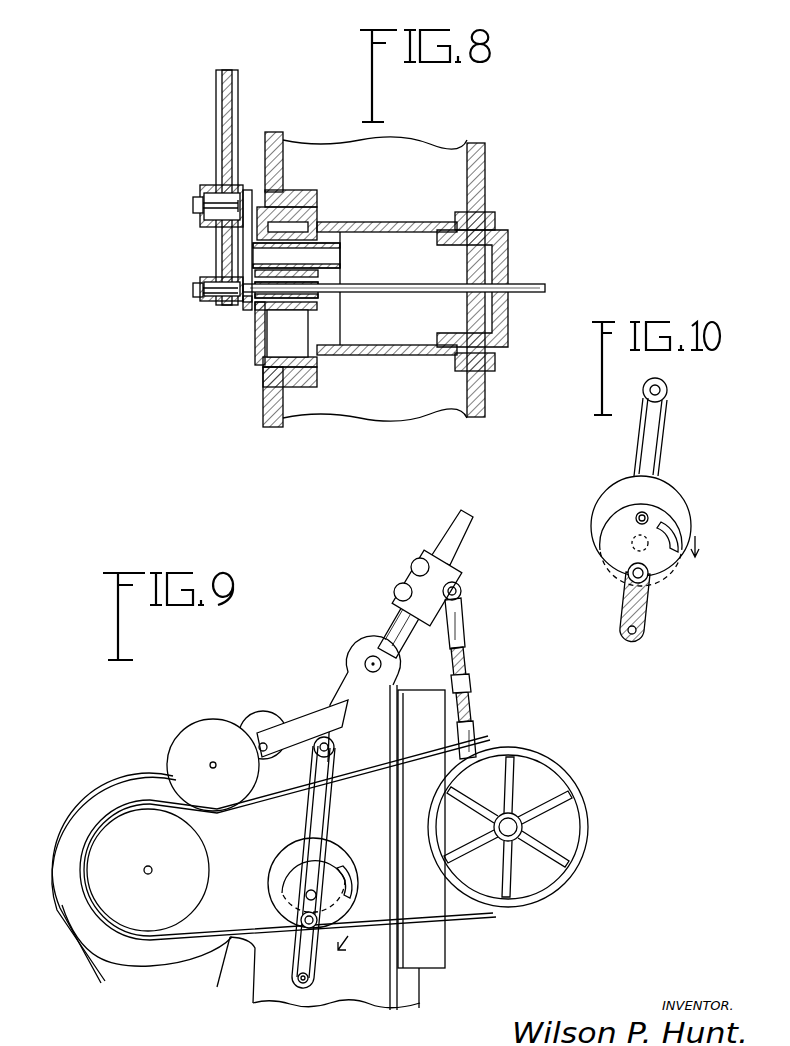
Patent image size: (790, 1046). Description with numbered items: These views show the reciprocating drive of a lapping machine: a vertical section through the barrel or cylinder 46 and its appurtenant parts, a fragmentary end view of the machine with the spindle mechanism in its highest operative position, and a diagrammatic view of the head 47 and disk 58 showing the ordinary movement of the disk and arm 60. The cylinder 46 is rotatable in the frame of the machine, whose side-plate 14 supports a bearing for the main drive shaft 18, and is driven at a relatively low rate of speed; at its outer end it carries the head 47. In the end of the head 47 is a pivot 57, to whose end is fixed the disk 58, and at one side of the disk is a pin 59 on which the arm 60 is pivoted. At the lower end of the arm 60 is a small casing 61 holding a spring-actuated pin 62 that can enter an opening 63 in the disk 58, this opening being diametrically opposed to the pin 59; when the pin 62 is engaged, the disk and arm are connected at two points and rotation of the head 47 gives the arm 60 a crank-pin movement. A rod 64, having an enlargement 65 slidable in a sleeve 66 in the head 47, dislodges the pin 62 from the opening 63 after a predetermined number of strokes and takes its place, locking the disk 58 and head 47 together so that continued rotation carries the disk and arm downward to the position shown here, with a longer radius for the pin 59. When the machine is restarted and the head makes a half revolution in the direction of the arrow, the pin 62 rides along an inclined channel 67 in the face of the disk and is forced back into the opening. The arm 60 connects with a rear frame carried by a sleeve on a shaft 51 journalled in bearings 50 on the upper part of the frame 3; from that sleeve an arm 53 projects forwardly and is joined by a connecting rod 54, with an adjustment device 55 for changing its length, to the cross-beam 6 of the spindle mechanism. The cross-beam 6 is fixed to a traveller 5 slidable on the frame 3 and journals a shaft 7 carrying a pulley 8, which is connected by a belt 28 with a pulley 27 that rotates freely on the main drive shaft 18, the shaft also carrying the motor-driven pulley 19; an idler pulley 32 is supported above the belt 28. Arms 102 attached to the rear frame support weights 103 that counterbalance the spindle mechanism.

In FIG. 8, the frame 3 is at (490, 398).
In FIG. 9, the frame 3 is at (380, 970).
In FIG. 9, the traveller 5 is at (440, 936).
In FIG. 9, the cross-beam 6 is at (493, 800).
In FIG. 9, the shaft 7 is at (540, 870).
In FIG. 9, the pulley 8 is at (584, 827).
In FIG. 8, the side-plate 14 is at (272, 422).
In FIG. 9, the shaft 18 is at (146, 866).
In FIG. 9, the pulley 19 is at (102, 800).
In FIG. 9, the pulley 27 is at (105, 895).
In FIG. 9, the belt 28 is at (493, 914).
In FIG. 9, the pulley 32 is at (200, 742).
In FIG. 8, the cylinder 46 is at (380, 357).
In FIG. 8, the head 47 is at (260, 360).
In FIG. 10, the head 47 is at (612, 562).
In FIG. 9, the head 47 is at (283, 850).
In FIG. 9, the bearings 50 is at (360, 648).
In FIG. 9, the shaft 51 is at (383, 664).
In FIG. 9, the arm 53 is at (390, 622).
In FIG. 9, the connecting rod 54 is at (466, 630).
In FIG. 9, the adjustment device 55 is at (473, 686).
In FIG. 8, the pivot 57 is at (310, 258).
In FIG. 10, the pivot 57 is at (632, 543).
In FIG. 9, the pivot 57 is at (305, 893).
In FIG. 8, the disk 58 is at (249, 190).
In FIG. 8, the pin 59 is at (230, 205).
In FIG. 10, the pin 59 is at (650, 580).
In FIG. 9, the pin 59 is at (301, 917).
In FIG. 8, the arm 60 is at (234, 80).
In FIG. 10, the arm 60 is at (656, 442).
In FIG. 9, the arm 60 is at (337, 801).
In FIG. 8, the casing 61 is at (222, 302).
In FIG. 8, the spring-actuated pin 62 is at (205, 290).
In FIG. 10, the spring-actuated pin 62 is at (636, 634).
In FIG. 9, the spring-actuated pin 62 is at (304, 985).
In FIG. 8, the opening 63 is at (247, 312).
In FIG. 10, the opening 63 is at (638, 514).
In FIG. 8, the rod 64 is at (402, 287).
In FIG. 10, the rod 64 is at (648, 516).
In FIG. 8, the enlargement 65 is at (284, 292).
In FIG. 8, the sleeve 66 is at (292, 312).
In FIG. 10, the inclined channel 67 is at (673, 530).
In FIG. 9, the inclined channel 67 is at (341, 885).
In FIG. 9, the arms 102 is at (307, 722).
In FIG. 9, the weights 103 is at (257, 718).